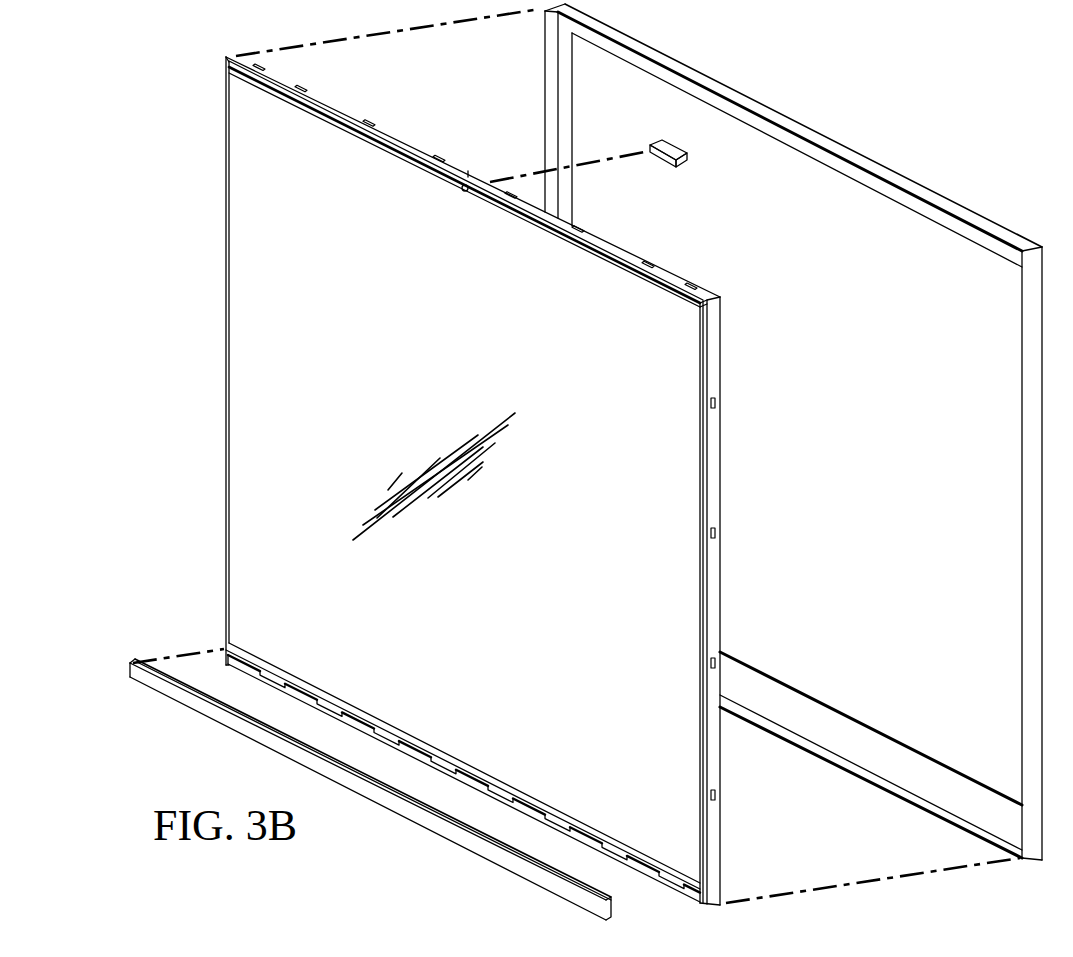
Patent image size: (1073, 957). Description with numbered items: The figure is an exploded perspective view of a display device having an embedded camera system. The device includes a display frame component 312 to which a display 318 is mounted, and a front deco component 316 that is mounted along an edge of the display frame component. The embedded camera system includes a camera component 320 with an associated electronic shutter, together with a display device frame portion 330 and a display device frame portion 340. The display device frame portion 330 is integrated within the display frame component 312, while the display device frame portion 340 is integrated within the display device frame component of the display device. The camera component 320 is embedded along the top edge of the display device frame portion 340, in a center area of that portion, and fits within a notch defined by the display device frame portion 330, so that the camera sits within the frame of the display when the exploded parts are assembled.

The display frame component 312 is at (226, 182).
The front deco component 316 is at (937, 193).
The display 318 is at (245, 388).
The camera component 320 is at (688, 157).
The display device frame portion 330 is at (480, 166).
The display device frame portion 340 is at (841, 124).